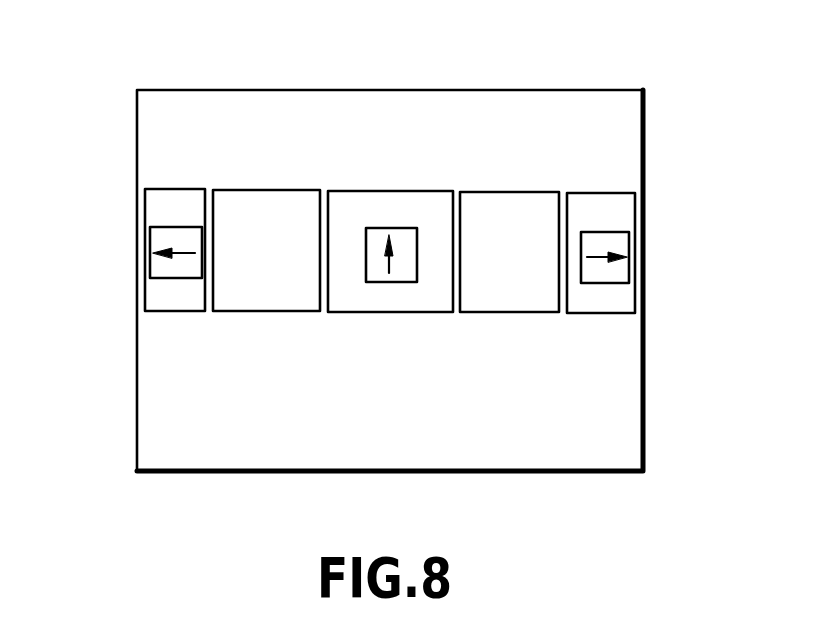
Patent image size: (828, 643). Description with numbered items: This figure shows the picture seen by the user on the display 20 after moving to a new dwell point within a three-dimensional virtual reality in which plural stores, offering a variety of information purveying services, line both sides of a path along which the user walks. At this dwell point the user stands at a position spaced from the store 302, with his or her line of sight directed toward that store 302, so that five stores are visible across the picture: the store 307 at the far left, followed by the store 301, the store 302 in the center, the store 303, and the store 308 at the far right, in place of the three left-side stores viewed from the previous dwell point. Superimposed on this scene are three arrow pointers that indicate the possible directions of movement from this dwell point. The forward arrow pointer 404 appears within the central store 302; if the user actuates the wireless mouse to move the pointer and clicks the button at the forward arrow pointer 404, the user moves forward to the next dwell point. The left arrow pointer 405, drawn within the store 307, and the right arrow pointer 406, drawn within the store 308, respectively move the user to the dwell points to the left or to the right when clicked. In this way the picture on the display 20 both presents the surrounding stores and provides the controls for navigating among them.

The display screen 20 is at (647, 148).
The store 301 is at (270, 203).
The store 302 is at (375, 202).
The store 303 is at (513, 212).
The store 307 is at (176, 203).
The store 308 is at (600, 211).
The forward arrow pointer 404 is at (403, 235).
The left arrow pointer 405 is at (157, 242).
The right arrow pointer 406 is at (617, 270).